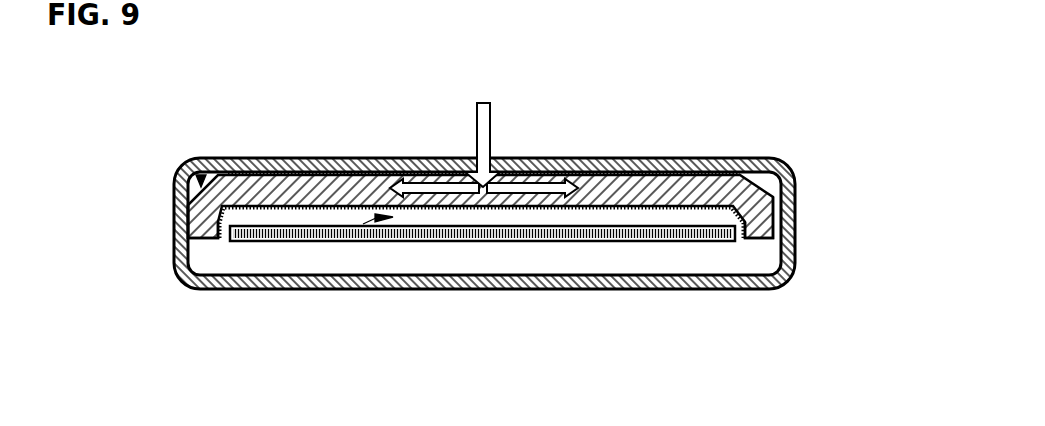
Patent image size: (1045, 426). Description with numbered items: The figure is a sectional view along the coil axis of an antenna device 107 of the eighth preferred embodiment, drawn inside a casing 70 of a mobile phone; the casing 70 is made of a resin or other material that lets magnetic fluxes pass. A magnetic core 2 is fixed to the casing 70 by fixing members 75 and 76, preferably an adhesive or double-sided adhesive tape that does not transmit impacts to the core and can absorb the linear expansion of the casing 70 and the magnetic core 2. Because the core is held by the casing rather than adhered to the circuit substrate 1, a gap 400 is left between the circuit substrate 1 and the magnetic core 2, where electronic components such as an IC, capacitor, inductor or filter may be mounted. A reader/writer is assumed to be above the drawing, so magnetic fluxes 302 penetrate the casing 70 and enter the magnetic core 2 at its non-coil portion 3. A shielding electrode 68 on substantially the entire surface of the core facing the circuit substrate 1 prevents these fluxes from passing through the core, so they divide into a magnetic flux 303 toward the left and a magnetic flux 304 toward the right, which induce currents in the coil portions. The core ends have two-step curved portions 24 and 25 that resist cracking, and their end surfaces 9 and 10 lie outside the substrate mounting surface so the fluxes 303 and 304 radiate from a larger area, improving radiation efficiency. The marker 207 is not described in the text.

The antenna device 107 is at (80, 64).
The heat flow indicator 207 is at (198, 174).
The curved portion 24 is at (188, 203).
The curved portion 25 is at (797, 195).
The end surface 9 is at (200, 240).
The end surface 10 is at (760, 240).
The circuit substrate 1 is at (293, 242).
The magnetic core 2 is at (356, 177).
The non-coil portion 3 is at (476, 206).
The gap 400 is at (363, 224).
The shielding electrode 68 is at (554, 206).
The casing 70 is at (713, 288).
The fixing member 75 is at (238, 173).
The fixing member 76 is at (685, 174).
The magnetic fluxes 302 is at (484, 125).
The magnetic flux 303 is at (412, 183).
The magnetic flux 304 is at (547, 183).